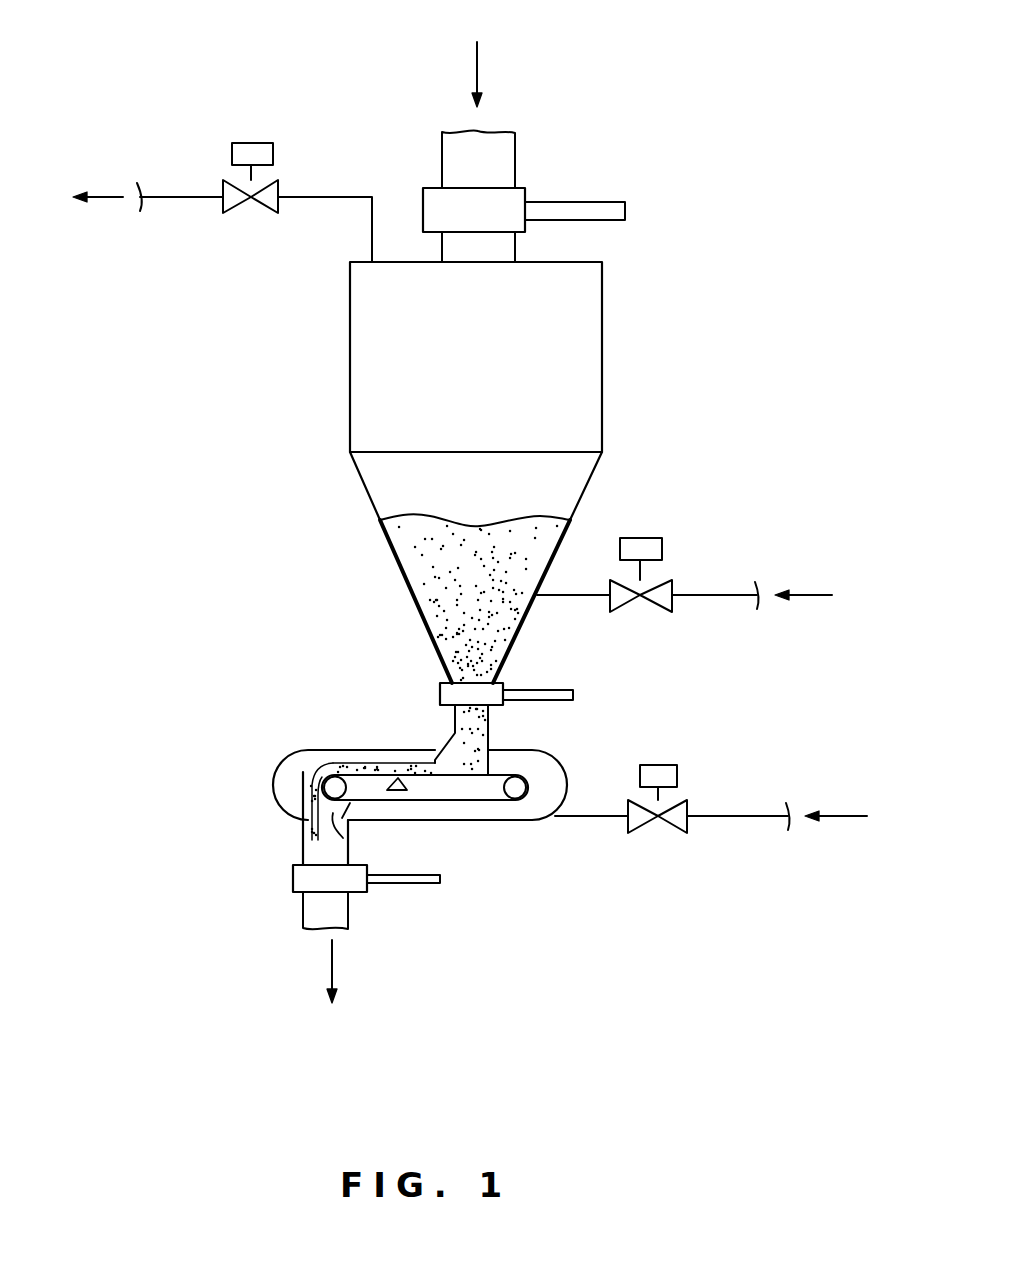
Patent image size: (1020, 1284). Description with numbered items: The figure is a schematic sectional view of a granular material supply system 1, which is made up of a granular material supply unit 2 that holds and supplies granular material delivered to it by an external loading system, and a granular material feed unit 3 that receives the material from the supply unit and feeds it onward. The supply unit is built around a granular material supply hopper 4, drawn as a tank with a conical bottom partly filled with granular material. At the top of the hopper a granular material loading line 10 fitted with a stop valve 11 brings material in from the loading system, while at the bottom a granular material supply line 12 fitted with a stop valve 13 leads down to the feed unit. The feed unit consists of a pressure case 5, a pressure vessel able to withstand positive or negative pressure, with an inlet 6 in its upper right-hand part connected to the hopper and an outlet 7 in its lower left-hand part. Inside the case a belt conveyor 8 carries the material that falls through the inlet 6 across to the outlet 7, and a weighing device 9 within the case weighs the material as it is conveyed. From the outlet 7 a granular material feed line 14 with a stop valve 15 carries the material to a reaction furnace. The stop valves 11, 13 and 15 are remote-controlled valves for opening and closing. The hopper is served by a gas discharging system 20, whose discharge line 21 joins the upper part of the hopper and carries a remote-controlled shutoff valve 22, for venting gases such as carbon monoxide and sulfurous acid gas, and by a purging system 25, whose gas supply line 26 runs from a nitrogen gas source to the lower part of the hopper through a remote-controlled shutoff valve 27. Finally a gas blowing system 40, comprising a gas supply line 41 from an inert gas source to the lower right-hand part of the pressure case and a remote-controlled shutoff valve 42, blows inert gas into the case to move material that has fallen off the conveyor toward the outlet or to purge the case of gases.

The granular material supply system 1 is at (740, 135).
The granular material supply unit 2 is at (427, 472).
The granular material feed unit 3 is at (333, 812).
The granular material supply hopper 4 is at (603, 312).
The pressure case 5 is at (283, 757).
The inlet 6 is at (450, 748).
The outlet 7 is at (357, 840).
The belt conveyor 8 is at (488, 803).
The weighing device 9 is at (410, 785).
The granular material loading line 10 is at (515, 155).
The stop valve 11 is at (423, 205).
The granular material supply line 12 is at (488, 715).
The stop valve 13 is at (440, 693).
The granular material feed line 14 is at (307, 847).
The stop valve 15 is at (293, 880).
The gas discharging system 20 is at (222, 158).
The discharge line 21 is at (177, 197).
The shutoff valve 22 is at (265, 205).
The purging system 25 is at (686, 530).
The gas supply line 26 is at (717, 595).
The shutoff valve 27 is at (630, 603).
The gas blowing system 40 is at (711, 797).
The gas supply line 41 is at (745, 816).
The shutoff valve 42 is at (643, 823).